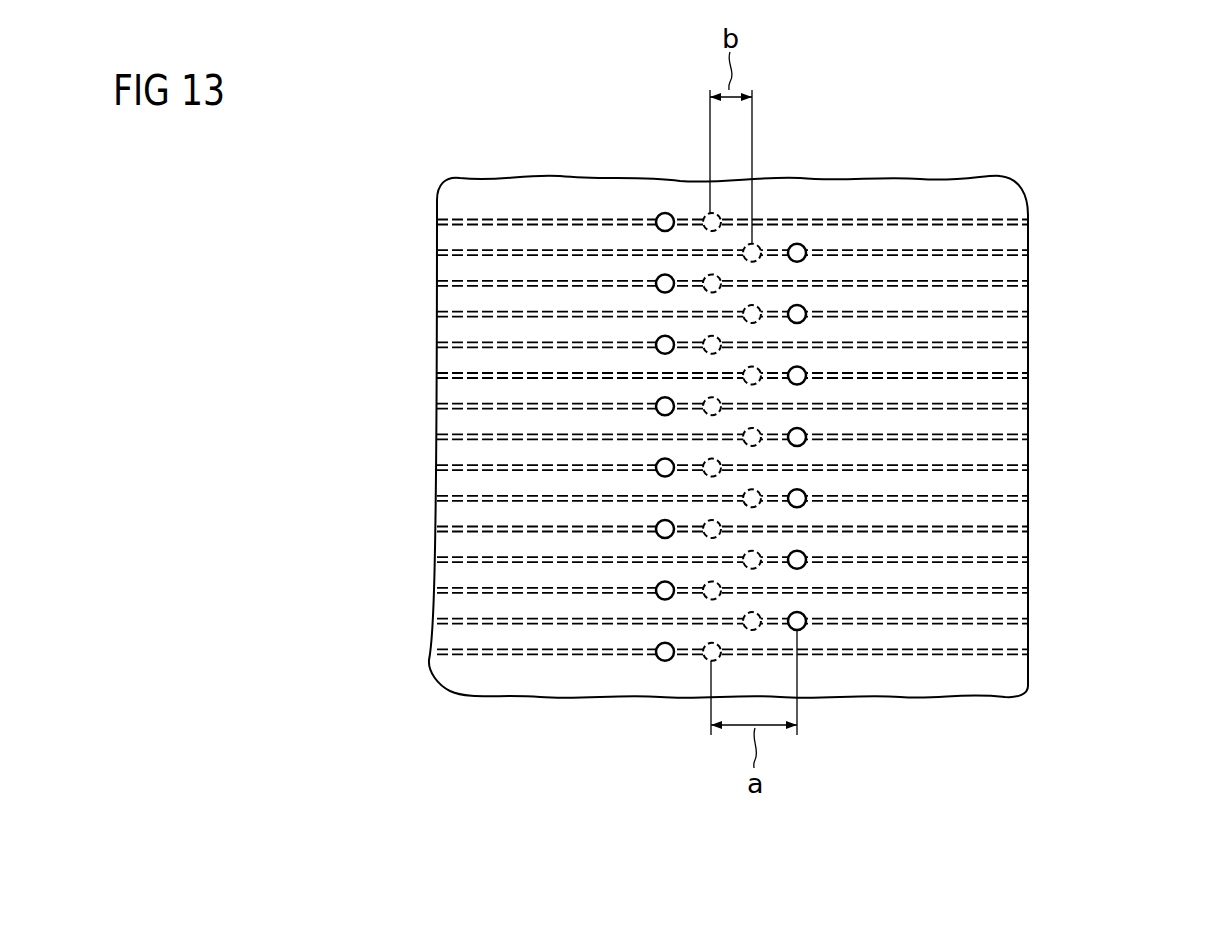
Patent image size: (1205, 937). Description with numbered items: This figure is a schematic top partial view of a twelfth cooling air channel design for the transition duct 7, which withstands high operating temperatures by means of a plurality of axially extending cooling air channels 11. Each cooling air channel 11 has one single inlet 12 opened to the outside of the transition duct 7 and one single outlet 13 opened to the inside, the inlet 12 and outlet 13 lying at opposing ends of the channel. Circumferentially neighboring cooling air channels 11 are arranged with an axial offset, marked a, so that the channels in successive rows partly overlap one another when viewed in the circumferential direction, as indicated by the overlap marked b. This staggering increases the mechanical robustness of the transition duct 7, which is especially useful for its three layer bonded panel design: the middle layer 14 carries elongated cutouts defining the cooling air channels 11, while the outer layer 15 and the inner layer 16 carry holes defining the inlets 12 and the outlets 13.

The transition duct 7 is at (1046, 192).
The cooling air channel 11 is at (778, 437).
The inlet 12 is at (662, 337).
The outlet 13 is at (709, 275).
The middle layer 14 is at (821, 483).
The outer layer 15 is at (821, 483).
The inner layer 16 is at (1016, 483).